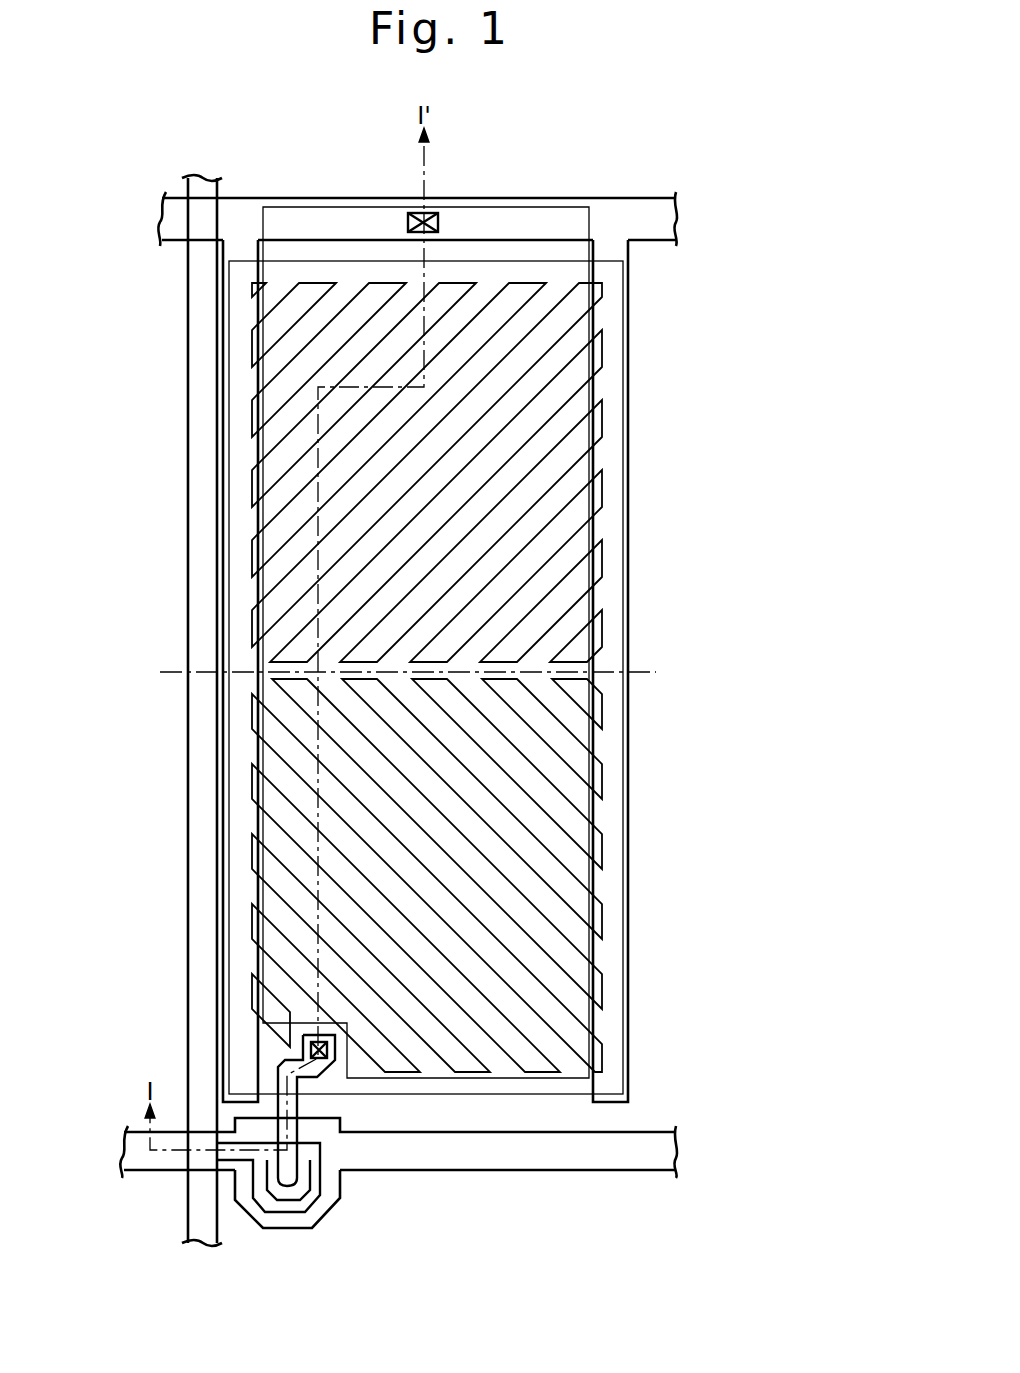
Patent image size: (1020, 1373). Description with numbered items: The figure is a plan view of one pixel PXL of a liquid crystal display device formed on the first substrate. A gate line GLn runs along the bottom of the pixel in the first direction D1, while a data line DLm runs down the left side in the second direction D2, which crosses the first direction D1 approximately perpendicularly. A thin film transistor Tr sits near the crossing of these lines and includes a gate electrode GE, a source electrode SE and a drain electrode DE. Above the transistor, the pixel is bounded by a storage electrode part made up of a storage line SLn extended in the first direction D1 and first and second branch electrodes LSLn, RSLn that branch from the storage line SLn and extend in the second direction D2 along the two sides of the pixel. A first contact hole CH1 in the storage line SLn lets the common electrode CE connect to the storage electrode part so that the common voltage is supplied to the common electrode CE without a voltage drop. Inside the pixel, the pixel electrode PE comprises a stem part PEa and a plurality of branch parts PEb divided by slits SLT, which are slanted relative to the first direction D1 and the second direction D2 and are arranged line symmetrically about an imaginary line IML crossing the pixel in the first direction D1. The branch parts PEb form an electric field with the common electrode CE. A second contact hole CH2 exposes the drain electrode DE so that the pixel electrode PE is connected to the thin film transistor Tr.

The pixel PXL is at (576, 178).
The storage line SLn is at (657, 236).
The first branch electrode LSLn is at (223, 326).
The second branch electrode RSLn is at (628, 384).
The data line DLm is at (188, 728).
The gate line GLn is at (592, 1158).
The first contact hole CH1 is at (428, 212).
The second contact hole CH2 is at (305, 1048).
The pixel electrode PE is at (713, 525).
The stem part PEa is at (508, 641).
The branch parts PEb is at (483, 677).
The slits SLT is at (574, 820).
The imaginary line IML is at (433, 673).
The common electrode CE is at (468, 1085).
The thin film transistor Tr is at (348, 1305).
The drain electrode DE is at (258, 1226).
The source electrode SE is at (288, 1214).
The gate electrode GE is at (330, 1226).
The first direction D1 is at (705, 1258).
The second direction D2 is at (705, 1258).